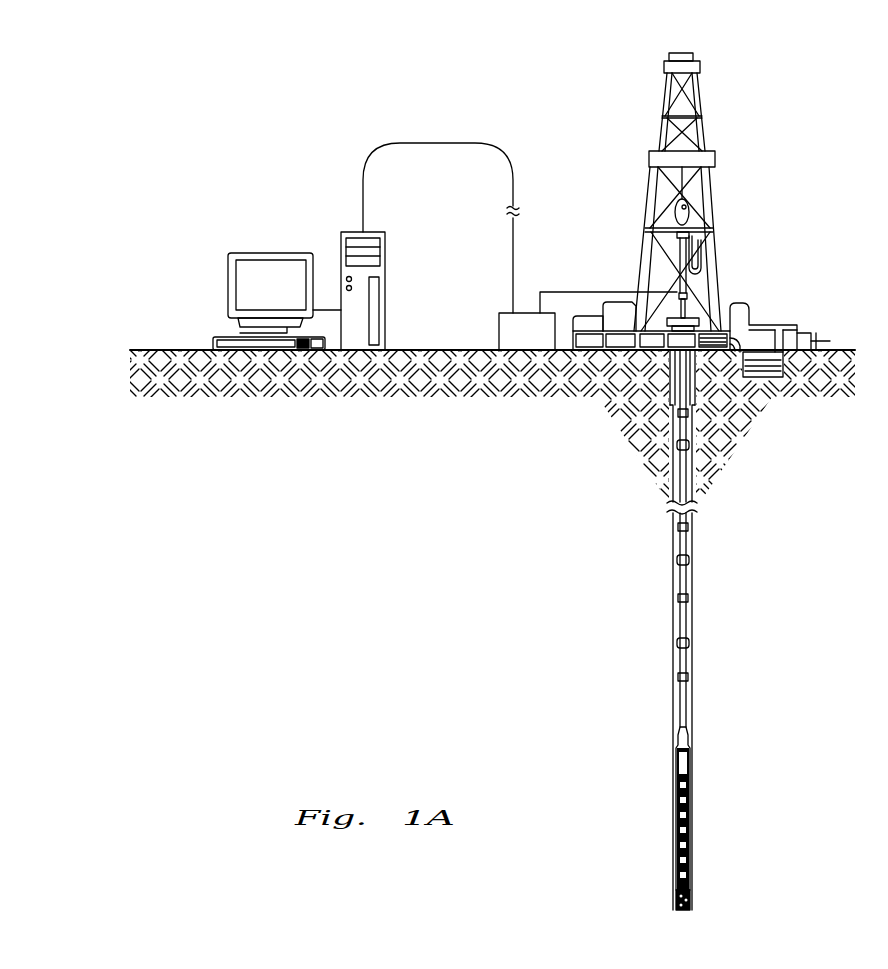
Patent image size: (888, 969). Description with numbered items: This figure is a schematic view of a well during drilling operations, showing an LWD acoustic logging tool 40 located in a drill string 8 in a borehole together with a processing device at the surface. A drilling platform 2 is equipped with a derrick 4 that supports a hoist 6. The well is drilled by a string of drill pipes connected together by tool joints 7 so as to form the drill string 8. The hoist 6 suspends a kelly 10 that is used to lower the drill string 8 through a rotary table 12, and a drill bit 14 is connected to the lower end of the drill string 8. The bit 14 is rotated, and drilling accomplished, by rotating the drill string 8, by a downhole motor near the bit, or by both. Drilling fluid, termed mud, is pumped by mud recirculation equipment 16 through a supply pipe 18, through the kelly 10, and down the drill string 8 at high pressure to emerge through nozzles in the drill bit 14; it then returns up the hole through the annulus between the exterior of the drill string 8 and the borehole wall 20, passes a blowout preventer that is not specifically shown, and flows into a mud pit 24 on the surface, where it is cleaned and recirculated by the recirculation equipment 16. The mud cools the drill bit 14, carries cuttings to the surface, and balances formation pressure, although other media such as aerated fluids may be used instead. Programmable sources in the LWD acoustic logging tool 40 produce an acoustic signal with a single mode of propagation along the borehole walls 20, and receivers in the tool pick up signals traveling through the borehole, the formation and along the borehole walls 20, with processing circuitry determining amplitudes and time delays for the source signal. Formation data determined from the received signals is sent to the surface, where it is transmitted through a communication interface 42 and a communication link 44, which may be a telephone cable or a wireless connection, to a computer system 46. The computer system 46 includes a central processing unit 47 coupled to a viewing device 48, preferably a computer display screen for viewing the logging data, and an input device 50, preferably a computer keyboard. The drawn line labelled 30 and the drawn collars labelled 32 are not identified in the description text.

The computer system 46 is at (434, 58).
The derrick 4 is at (700, 95).
The hoist 6 is at (690, 212).
The kelly 10 is at (683, 250).
The telemetry connection / hose 30 is at (680, 292).
The rotary table 12 is at (694, 322).
The drilling platform 2 is at (588, 334).
The supply pipe 18 is at (783, 325).
The mud recirculation equipment 16 is at (812, 332).
The mud pit 24 is at (757, 378).
The borehole wall 20 is at (693, 466).
The drill string 8 is at (688, 427).
The tool joints 7 is at (675, 412).
The drill collar / repeater 32 is at (680, 445).
The LWD acoustic logging tool 40 is at (690, 760).
The drill bit 14 is at (690, 894).
The communication link 44 is at (512, 148).
The communication interface 42 is at (505, 313).
The viewing device 48 is at (250, 253).
The input device 50 is at (228, 337).
The central processing unit 47 is at (387, 322).